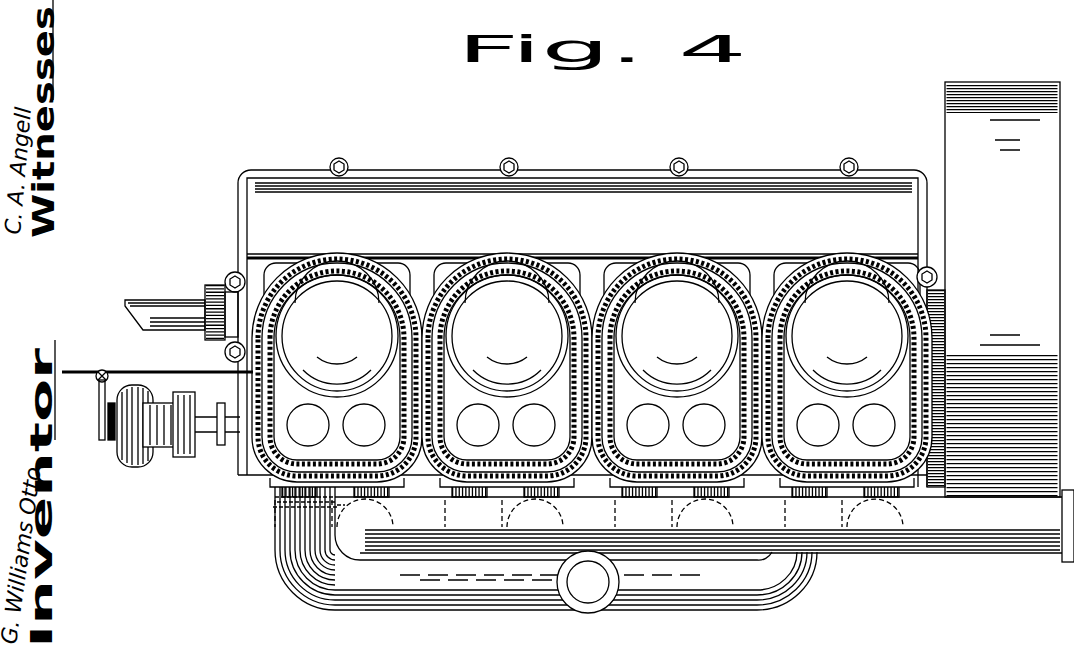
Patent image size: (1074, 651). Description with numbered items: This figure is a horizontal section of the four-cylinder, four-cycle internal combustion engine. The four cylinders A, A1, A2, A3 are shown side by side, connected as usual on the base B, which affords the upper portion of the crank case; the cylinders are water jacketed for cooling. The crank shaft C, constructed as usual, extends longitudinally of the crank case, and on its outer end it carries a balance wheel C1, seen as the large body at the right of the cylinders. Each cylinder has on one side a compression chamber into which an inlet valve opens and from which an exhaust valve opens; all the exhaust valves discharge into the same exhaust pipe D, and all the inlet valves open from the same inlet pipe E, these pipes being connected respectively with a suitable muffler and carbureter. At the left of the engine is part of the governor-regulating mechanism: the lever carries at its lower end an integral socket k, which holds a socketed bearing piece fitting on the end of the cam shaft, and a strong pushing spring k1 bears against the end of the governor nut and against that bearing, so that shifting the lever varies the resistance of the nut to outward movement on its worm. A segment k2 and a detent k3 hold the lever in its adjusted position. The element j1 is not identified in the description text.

The cylinder A is at (318, 272).
The cylinder A1 is at (493, 273).
The cylinder A2 is at (670, 272).
The cylinder A3 is at (847, 272).
The base B is at (727, 212).
The crank shaft C is at (173, 310).
The balance wheel C1 is at (988, 112).
The exhaust pipe D is at (912, 535).
The inlet pipe E is at (808, 578).
The socket k is at (106, 440).
The pushing spring k1 is at (100, 405).
The segment k2 is at (82, 370).
The detent k3 is at (112, 356).
The valve casing j1 is at (160, 458).